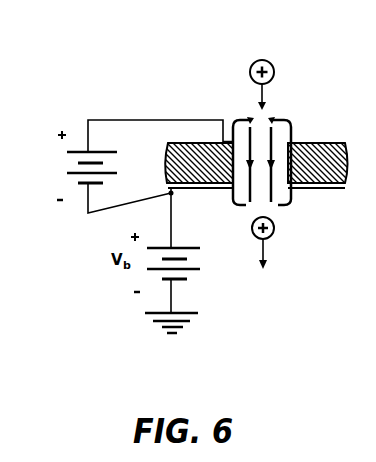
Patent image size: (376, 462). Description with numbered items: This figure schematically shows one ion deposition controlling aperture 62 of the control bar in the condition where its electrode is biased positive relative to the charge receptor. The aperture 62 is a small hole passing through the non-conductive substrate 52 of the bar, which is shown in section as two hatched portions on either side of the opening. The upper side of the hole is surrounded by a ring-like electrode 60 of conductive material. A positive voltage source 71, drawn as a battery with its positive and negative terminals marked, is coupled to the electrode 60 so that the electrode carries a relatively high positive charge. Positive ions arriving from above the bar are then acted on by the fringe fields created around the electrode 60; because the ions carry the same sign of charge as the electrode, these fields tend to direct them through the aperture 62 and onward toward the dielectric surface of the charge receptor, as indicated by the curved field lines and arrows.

The positive voltage source 71 is at (46, 118).
The ring-like electrode 60 is at (296, 142).
The substrate 52 is at (238, 165).
The ion deposition controlling aperture 62 is at (288, 242).